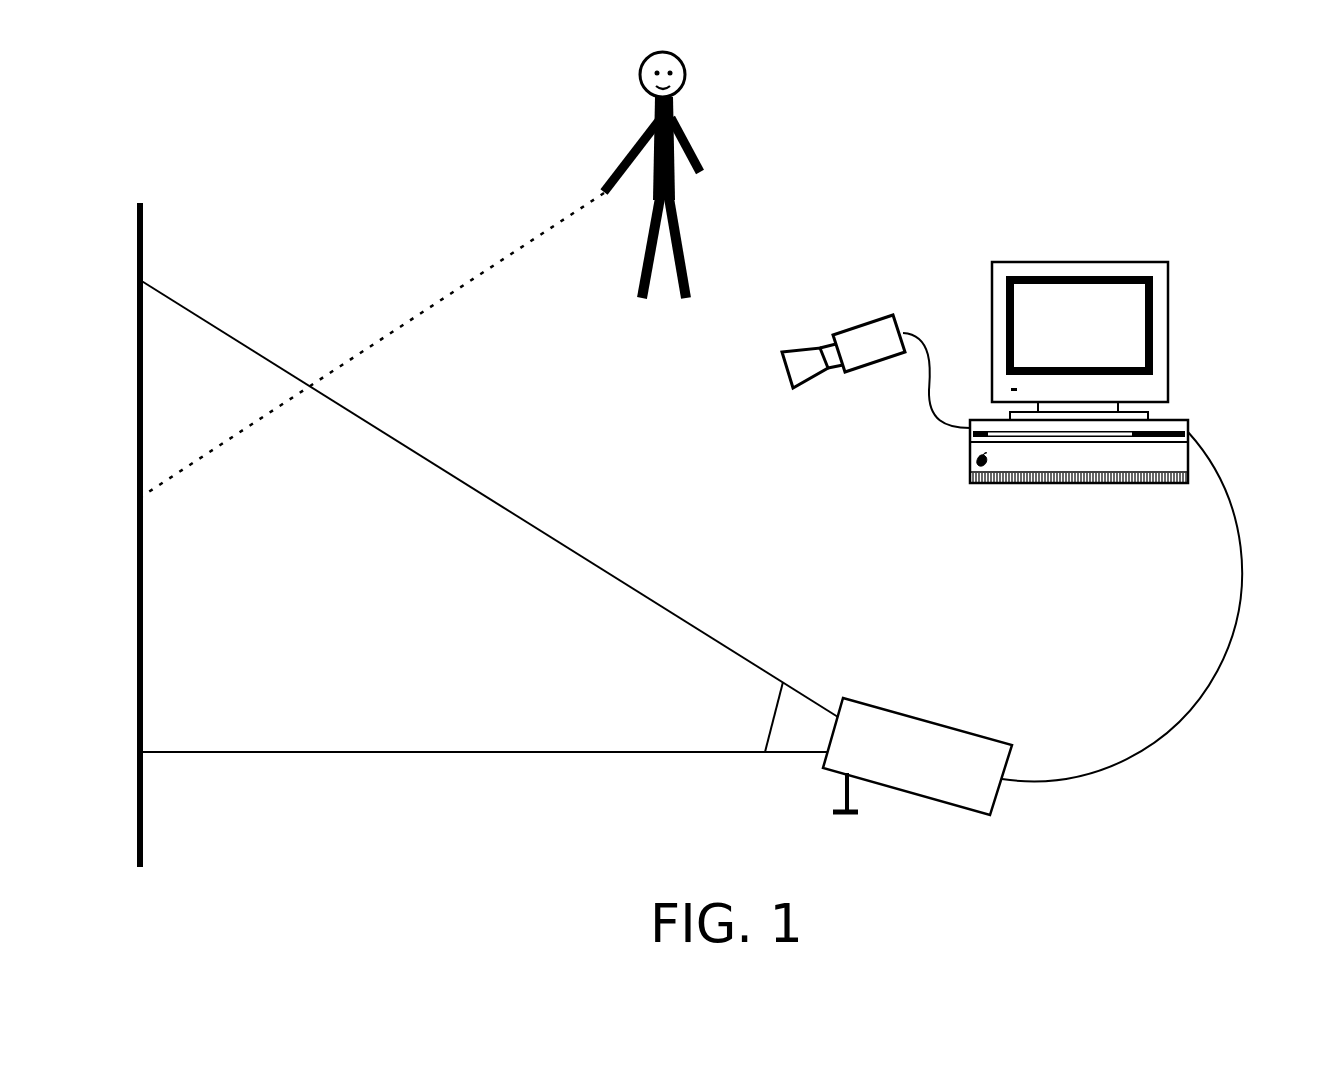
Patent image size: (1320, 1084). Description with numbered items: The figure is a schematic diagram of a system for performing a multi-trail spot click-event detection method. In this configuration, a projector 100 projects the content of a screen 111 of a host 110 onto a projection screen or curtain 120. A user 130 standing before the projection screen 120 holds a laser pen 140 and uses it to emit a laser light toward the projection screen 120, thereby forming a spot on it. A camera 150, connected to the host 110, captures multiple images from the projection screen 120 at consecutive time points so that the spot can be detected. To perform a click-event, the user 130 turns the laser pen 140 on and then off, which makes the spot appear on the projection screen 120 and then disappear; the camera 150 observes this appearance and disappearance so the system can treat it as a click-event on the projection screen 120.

The projector 100 is at (922, 718).
The host 110 is at (1080, 485).
The screen 111 is at (1073, 330).
The projection screen 120 is at (142, 805).
The user 130 is at (656, 108).
The laser pen 140 is at (603, 191).
The camera 150 is at (863, 318).